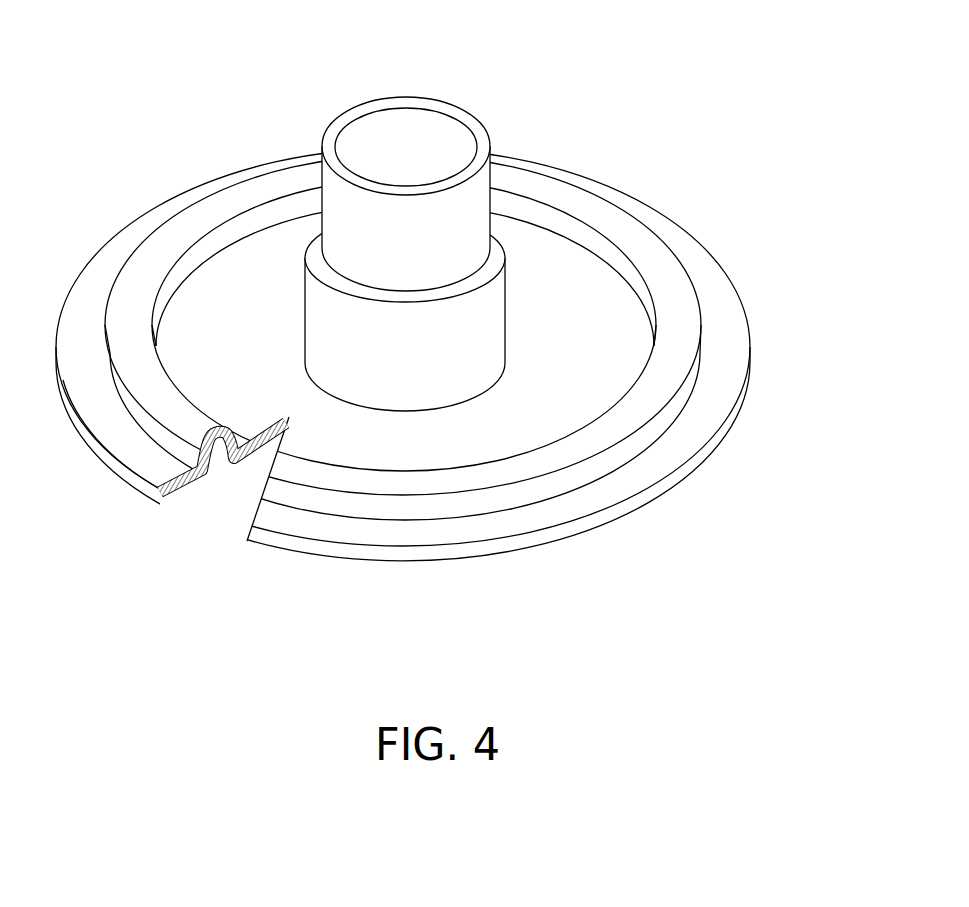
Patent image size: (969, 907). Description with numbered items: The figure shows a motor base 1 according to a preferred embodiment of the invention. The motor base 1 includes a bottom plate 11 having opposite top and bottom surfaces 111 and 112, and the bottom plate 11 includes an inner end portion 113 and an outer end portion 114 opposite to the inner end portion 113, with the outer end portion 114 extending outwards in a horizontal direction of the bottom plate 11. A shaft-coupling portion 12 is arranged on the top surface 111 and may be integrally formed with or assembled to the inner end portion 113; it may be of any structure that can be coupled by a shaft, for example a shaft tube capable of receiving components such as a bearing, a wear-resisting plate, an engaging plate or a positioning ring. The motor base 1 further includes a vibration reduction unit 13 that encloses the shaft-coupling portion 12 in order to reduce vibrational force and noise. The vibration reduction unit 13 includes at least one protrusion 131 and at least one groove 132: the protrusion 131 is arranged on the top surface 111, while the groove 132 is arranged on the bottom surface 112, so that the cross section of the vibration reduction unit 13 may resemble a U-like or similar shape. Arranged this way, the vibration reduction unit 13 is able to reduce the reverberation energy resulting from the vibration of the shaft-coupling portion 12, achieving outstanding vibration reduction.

The motor base 1 is at (392, 329).
The bottom plate 11 is at (408, 402).
The top surface 111 is at (550, 515).
The bottom surface 112 is at (610, 523).
The inner end portion 113 is at (433, 420).
The outer end portion 114 is at (290, 562).
The shaft-coupling portion 12 is at (317, 181).
The vibration reduction unit 13 is at (155, 514).
The protrusion 131 is at (148, 425).
The groove 132 is at (215, 463).